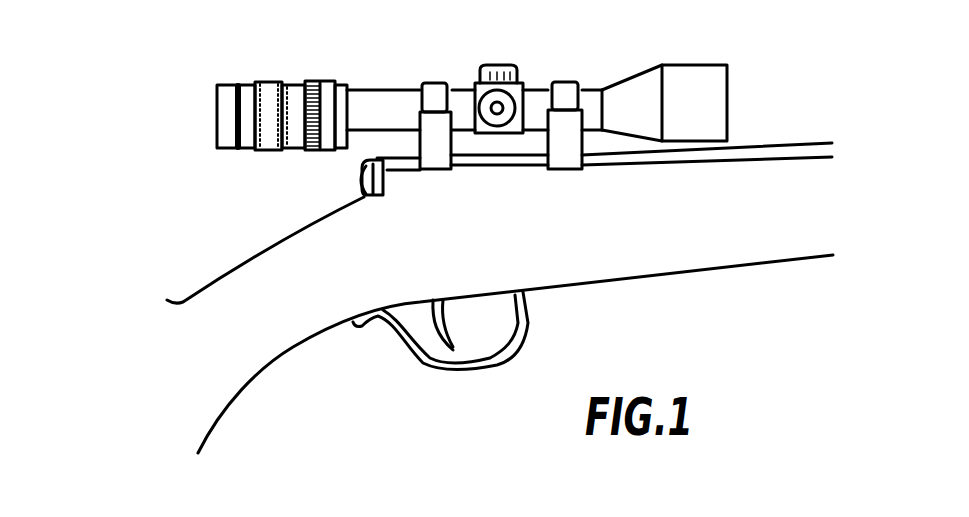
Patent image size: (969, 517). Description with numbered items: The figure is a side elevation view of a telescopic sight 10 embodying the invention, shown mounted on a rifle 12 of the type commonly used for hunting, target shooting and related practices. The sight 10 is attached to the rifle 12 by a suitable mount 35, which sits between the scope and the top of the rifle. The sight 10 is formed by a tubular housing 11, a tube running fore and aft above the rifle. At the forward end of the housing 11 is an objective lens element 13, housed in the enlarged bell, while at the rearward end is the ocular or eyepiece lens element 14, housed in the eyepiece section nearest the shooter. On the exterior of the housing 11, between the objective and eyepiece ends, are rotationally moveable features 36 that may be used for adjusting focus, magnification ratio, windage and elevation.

The telescopic sight 10 is at (482, 125).
The tubular housing 11 is at (387, 89).
The rifle 12 is at (698, 233).
The objective lens element 13 is at (700, 65).
The ocular or eyepiece lens element 14 is at (262, 83).
The mount 35 is at (543, 155).
The rotationally moveable features 36 is at (513, 33).